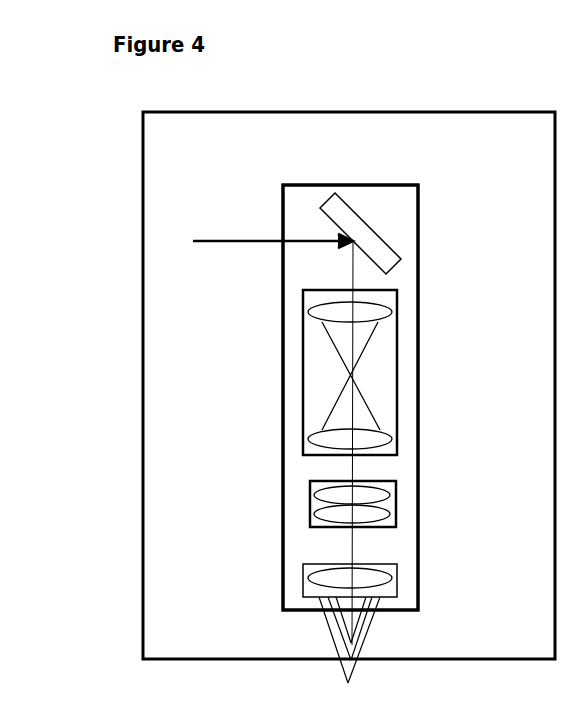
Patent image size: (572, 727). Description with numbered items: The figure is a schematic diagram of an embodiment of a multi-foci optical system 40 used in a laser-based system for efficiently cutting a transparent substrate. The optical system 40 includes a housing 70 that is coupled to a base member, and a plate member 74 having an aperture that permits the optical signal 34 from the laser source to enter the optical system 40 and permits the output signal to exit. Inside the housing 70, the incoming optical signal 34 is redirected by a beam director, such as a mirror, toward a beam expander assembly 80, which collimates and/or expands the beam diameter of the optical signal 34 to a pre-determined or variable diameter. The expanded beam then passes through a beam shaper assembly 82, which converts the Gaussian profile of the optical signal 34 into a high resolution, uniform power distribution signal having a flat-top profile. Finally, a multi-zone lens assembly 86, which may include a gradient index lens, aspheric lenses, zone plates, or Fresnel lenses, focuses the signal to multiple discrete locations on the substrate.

The optical signal 34 is at (273, 232).
The multi-foci optical system 40 is at (420, 418).
The housing 70 is at (283, 425).
The plate member 74 is at (143, 430).
The beam expander assembly 80 is at (301, 353).
The beam shaper assembly 82 is at (398, 489).
The multi-zone lens assembly 86 is at (400, 578).